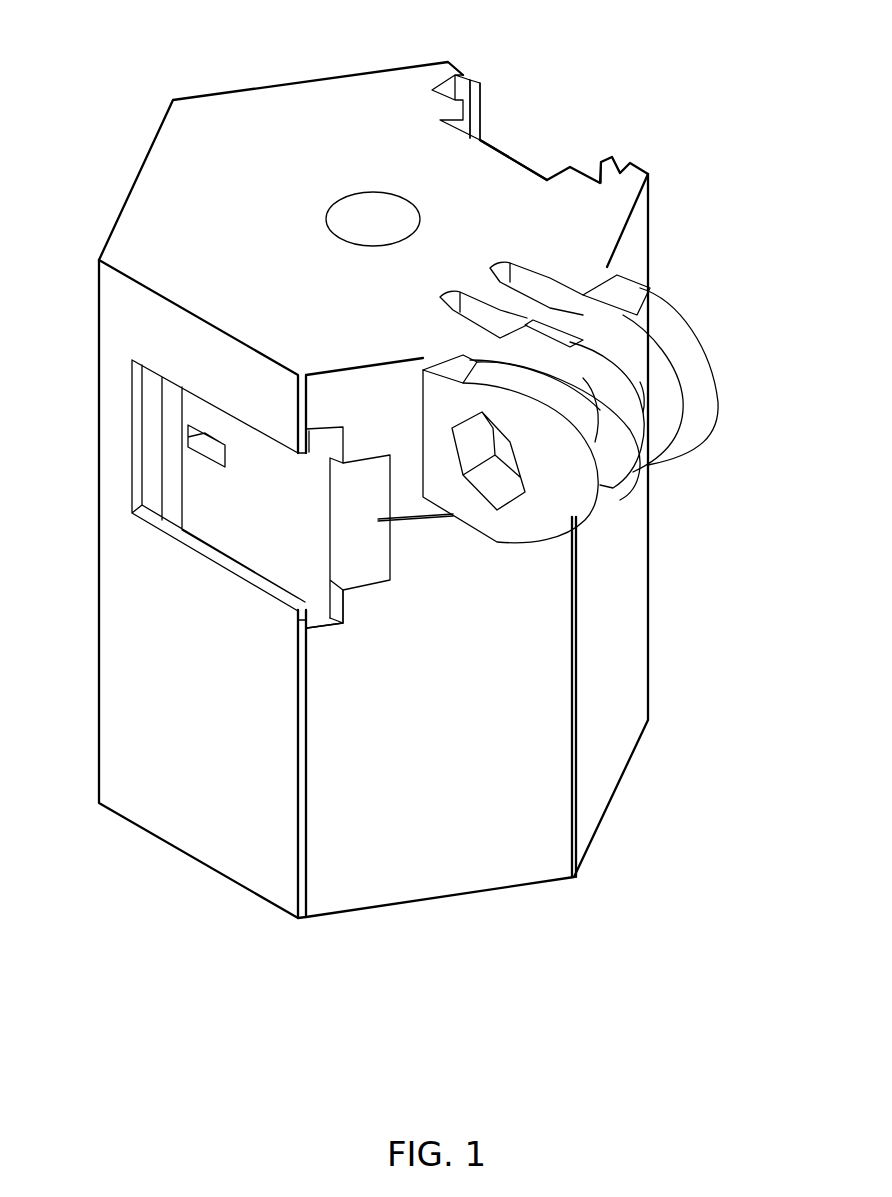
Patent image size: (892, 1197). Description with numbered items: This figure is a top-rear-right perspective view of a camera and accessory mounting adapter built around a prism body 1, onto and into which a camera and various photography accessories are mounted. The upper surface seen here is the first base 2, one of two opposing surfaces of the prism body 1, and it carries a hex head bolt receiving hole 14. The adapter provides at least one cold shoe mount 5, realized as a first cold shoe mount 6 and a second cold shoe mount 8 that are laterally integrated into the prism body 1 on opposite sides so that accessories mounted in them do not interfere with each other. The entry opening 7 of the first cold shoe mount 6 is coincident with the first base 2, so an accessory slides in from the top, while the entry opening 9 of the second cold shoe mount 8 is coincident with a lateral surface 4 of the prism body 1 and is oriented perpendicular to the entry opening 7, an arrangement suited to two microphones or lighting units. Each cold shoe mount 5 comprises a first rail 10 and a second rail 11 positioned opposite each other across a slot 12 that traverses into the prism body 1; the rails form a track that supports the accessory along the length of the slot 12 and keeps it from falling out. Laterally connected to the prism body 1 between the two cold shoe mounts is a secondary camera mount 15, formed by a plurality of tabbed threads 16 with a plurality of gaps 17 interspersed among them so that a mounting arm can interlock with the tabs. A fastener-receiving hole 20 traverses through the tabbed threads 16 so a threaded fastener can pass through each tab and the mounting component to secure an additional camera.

The prism body 1 is at (219, 64).
The first base 2 is at (243, 225).
The lateral surface 4 is at (475, 670).
The at least one cold shoe mount 5 is at (366, 614).
The first cold shoe mount 6 is at (533, 73).
The entry opening 7 is at (495, 147).
The second cold shoe mount 8 is at (118, 434).
The entry opening 9 is at (343, 430).
The first rail 10 is at (468, 75).
The second rail 11 is at (617, 166).
The slot 12 is at (248, 494).
The hex head bolt receiving hole 14 is at (376, 207).
The secondary camera mount 15 is at (602, 407).
The plurality of tabbed threads 16 is at (666, 313).
The plurality of gaps 17 is at (508, 272).
The fastener-receiving hole 20 is at (490, 486).